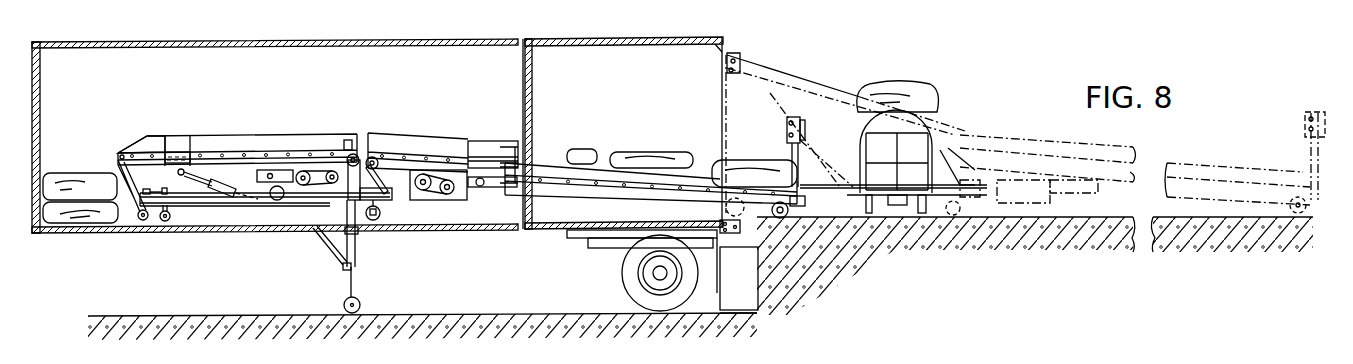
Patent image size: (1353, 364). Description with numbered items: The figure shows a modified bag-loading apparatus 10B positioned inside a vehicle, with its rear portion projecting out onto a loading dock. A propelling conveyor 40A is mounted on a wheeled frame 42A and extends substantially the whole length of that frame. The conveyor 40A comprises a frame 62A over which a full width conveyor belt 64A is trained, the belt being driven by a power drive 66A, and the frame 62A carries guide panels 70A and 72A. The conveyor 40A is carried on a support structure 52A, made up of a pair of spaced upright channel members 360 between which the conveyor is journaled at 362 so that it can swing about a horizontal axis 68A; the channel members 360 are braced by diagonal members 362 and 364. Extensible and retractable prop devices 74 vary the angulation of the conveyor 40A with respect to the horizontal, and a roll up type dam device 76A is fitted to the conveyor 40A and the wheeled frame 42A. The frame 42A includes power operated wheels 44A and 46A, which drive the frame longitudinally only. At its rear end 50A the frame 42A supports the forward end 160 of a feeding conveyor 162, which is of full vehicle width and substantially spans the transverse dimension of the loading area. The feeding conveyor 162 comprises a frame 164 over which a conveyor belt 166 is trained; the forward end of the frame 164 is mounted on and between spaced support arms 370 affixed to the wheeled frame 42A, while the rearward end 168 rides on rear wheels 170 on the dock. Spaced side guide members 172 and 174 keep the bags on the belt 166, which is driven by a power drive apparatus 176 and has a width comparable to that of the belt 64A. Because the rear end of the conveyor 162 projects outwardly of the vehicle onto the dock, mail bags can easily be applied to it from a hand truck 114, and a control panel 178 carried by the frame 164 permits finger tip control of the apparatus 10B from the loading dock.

The apparatus 10B is at (441, 66).
The propelling conveyor 40A is at (268, 118).
The wheeled frame 42A is at (232, 218).
The power operated wheel 44A is at (150, 230).
The power operated wheel 46A is at (379, 232).
The rear end 50A is at (390, 190).
The support structure 52A is at (347, 175).
The frame 62A is at (218, 148).
The conveyor belt 64A is at (182, 157).
The power drive 66A is at (298, 188).
The horizontal axis 68A is at (357, 153).
The guide panel 70A is at (147, 147).
The guide panel 72A is at (177, 143).
The prop device 74 is at (208, 192).
The roll up type dam device 76A is at (123, 200).
The hand truck 114 is at (935, 112).
The forward end 160 is at (378, 163).
The feeding conveyor 162 is at (601, 151).
The frame 164 is at (550, 187).
The conveyor belt 166 is at (503, 142).
The rearward end 168 is at (798, 205).
The rear wheel 170 is at (787, 220).
The side guide member 172 is at (445, 137).
The side guide member 174 is at (480, 147).
The power drive apparatus 176 is at (476, 199).
The control panel 178 is at (815, 103).
The upright channel member 360 is at (355, 187).
The diagonal member 362 is at (347, 135).
The diagonal member 364 is at (435, 223).
The support arm 370 is at (377, 168).